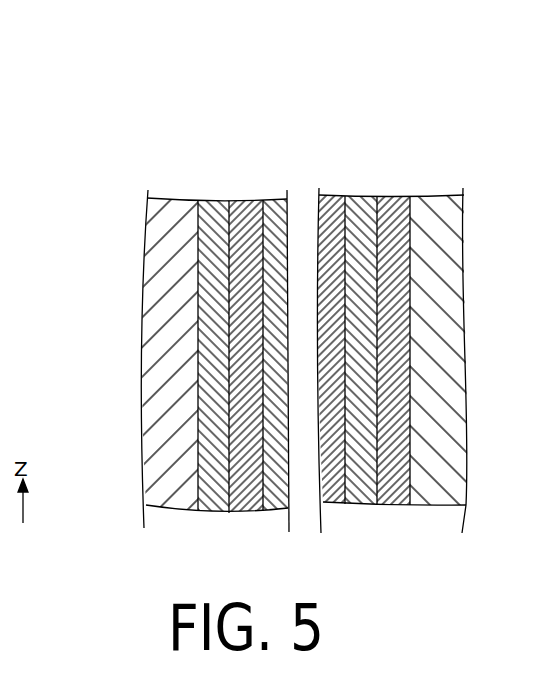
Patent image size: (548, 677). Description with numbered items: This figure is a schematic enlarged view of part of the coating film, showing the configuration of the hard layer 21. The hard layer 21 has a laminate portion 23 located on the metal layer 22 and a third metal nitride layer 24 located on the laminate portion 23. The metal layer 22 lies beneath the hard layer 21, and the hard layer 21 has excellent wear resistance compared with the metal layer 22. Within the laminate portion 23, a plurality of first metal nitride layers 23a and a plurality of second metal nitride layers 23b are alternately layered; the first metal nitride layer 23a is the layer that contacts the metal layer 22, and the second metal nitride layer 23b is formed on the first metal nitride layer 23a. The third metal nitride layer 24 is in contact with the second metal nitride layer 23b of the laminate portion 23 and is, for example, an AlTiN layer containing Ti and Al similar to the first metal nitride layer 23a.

The hard layer 21 is at (415, 91).
The metal layer 22 is at (437, 196).
The laminate portion 23 is at (415, 132).
The first metal nitride layer 23a is at (245, 198).
The second metal nitride layer 23b is at (212, 198).
The third metal nitride layer 24 is at (173, 197).